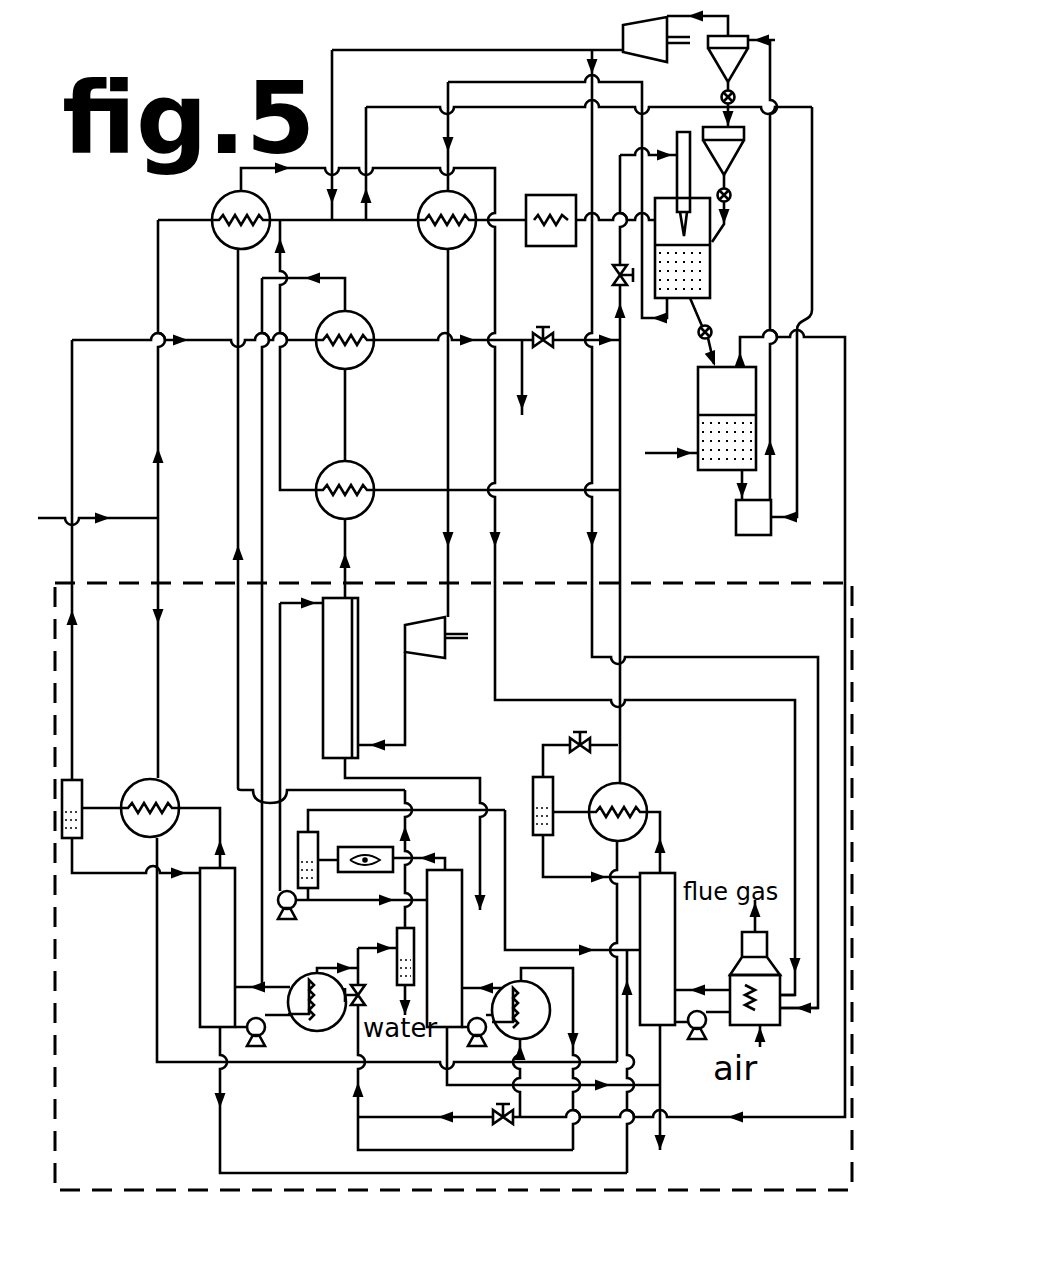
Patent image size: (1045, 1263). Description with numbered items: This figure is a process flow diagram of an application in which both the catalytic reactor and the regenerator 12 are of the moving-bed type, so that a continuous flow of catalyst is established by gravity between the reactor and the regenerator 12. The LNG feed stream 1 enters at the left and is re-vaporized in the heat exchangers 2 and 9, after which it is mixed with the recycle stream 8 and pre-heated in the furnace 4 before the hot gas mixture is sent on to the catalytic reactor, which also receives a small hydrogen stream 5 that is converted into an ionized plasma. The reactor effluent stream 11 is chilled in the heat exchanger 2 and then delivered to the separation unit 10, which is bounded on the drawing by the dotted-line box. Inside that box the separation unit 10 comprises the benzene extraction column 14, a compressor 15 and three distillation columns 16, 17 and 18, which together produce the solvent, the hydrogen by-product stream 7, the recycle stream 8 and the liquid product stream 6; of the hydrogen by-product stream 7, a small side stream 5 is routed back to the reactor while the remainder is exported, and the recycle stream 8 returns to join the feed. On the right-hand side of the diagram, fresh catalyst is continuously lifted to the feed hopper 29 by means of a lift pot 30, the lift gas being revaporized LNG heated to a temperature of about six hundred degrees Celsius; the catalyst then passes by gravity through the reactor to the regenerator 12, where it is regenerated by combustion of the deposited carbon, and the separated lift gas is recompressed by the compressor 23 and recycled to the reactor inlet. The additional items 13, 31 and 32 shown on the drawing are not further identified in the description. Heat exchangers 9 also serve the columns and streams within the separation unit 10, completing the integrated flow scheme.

The LNG feed stream 1 is at (128, 513).
The heat exchanger 2 is at (228, 250).
The furnace 4 is at (565, 246).
The hydrogen stream 5 is at (586, 362).
The liquid product stream 6 is at (662, 1125).
The hydrogen by-product stream 7 is at (525, 418).
The recycle stream 8 is at (620, 728).
The heat exchanger 9 is at (365, 362).
The separation unit 10 is at (58, 1177).
The reactor effluent stream 11 is at (448, 100).
The regenerator 12 is at (718, 470).
The inlet stream 13 is at (683, 458).
The benzene extraction column 14 is at (358, 645).
The compressor 15 is at (450, 622).
The distillation column 16 is at (465, 870).
The distillation column 17 is at (235, 870).
The distillation column 18 is at (662, 870).
The compressor 23 is at (625, 40).
The feed hopper 29 is at (751, 197).
The lift pot 30 is at (760, 535).
The vessel 31 is at (712, 240).
The valve 32 is at (700, 337).